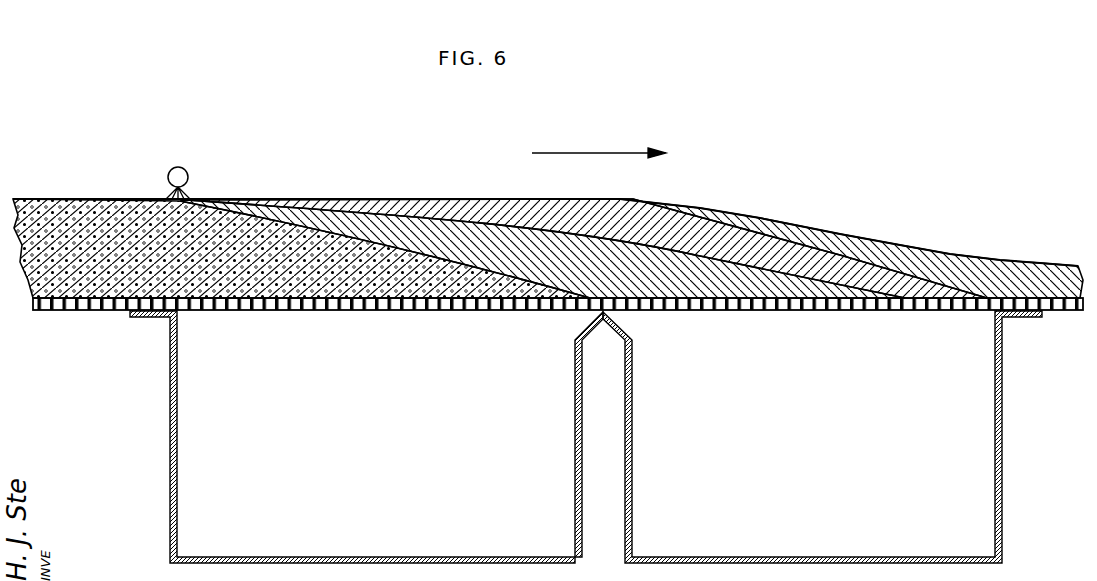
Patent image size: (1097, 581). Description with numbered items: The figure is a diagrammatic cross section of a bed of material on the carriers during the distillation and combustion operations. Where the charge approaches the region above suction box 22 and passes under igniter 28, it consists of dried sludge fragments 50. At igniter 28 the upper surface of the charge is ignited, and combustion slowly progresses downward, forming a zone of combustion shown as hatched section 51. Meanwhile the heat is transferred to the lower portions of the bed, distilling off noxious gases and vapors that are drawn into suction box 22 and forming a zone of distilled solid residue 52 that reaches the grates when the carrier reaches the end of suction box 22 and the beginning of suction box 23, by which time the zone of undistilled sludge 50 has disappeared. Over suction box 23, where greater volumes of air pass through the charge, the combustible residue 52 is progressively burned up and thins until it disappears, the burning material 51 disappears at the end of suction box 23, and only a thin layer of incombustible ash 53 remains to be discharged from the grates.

The suction box 22 is at (366, 437).
The suction box 23 is at (822, 437).
The igniter 28 is at (187, 170).
The dried sludge fragments 50 is at (301, 248).
The zone of combustion 51 is at (587, 248).
The zone of distilled solid residue 52 is at (542, 249).
The zone of incombustible ash 53 is at (981, 262).